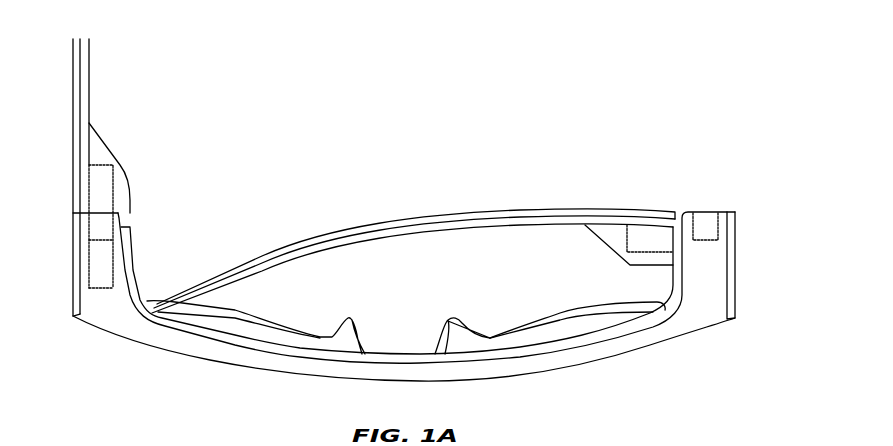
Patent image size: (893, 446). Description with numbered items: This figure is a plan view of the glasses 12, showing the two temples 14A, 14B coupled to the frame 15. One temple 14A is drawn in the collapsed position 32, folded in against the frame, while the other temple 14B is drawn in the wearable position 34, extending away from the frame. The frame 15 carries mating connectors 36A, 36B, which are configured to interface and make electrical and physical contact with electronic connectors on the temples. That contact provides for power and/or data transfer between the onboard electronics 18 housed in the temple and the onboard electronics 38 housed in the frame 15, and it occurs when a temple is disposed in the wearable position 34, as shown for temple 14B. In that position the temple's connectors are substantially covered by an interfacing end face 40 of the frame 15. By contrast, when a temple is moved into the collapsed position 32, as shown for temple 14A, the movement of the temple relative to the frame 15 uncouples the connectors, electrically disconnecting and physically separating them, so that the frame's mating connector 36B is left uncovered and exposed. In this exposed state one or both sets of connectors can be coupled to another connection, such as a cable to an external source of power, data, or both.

The glasses 12 is at (547, 118).
The temple 14A is at (367, 223).
The temple 14B is at (91, 82).
The frame 15 is at (668, 325).
The onboard electronics 18 is at (100, 177).
The collapsed position 32 is at (453, 198).
The wearable position 34 is at (137, 184).
The mating connector 36A is at (98, 230).
The mating connector 36B is at (708, 227).
The onboard electronics 38 is at (98, 265).
The interfacing end face 40 is at (705, 212).